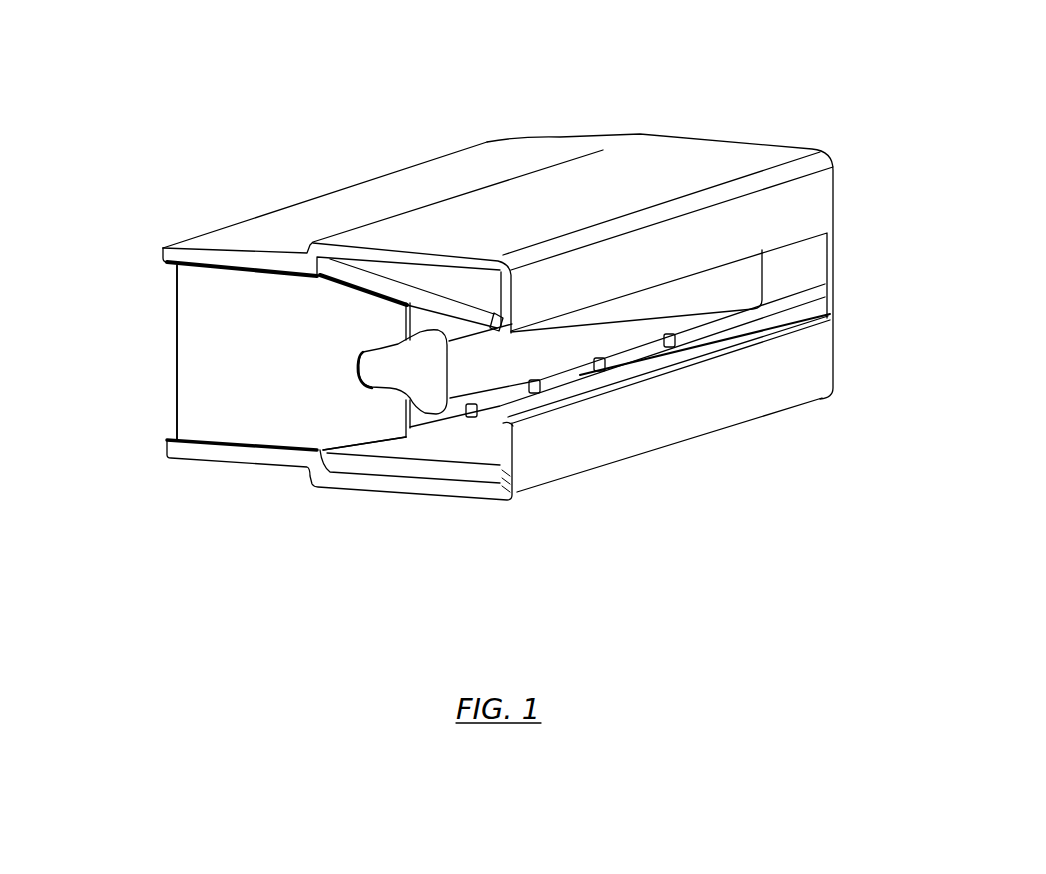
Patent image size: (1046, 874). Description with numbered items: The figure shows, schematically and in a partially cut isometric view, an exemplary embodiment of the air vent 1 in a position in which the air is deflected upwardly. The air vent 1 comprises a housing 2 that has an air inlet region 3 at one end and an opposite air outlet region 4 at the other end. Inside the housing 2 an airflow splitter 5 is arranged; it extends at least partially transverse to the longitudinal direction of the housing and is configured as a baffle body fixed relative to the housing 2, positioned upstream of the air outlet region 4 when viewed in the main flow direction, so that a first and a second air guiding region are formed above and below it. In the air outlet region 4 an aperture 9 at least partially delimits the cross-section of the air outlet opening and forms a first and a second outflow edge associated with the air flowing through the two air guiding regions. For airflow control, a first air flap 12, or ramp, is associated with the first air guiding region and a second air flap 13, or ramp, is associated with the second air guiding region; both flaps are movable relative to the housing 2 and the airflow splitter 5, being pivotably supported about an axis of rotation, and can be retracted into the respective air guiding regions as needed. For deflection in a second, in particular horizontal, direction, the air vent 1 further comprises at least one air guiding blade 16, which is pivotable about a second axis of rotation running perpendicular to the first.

The air vent 1 is at (414, 65).
The housing 2 is at (288, 231).
The air inlet region 3 is at (144, 314).
The air outlet region 4 is at (858, 260).
The airflow splitter 5 is at (520, 345).
The aperture 9 is at (776, 207).
The first air flap 12 is at (438, 298).
The second air flap 13 is at (370, 462).
The air guiding blade 16 is at (225, 392).